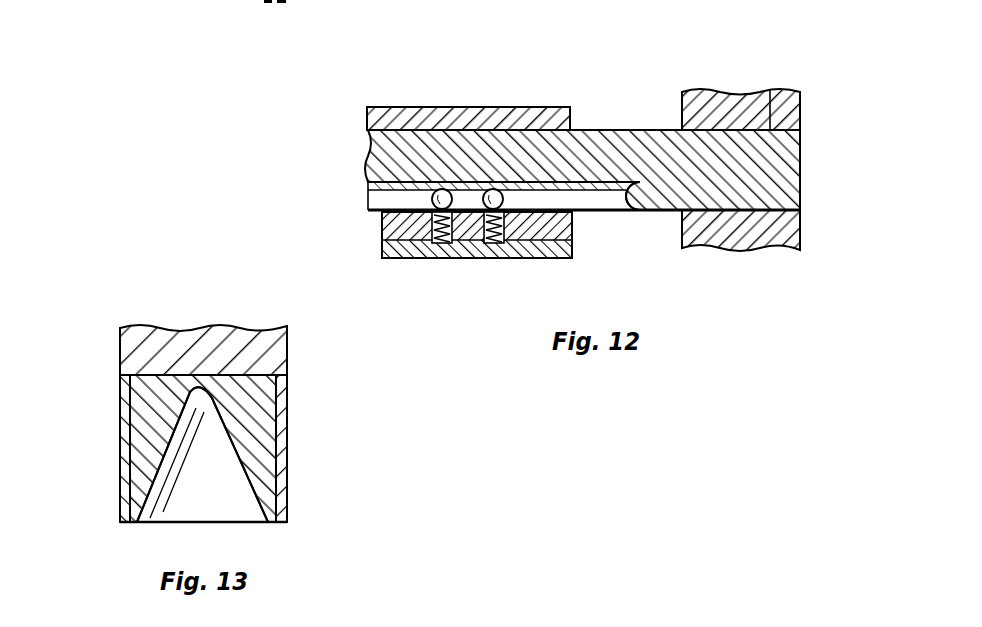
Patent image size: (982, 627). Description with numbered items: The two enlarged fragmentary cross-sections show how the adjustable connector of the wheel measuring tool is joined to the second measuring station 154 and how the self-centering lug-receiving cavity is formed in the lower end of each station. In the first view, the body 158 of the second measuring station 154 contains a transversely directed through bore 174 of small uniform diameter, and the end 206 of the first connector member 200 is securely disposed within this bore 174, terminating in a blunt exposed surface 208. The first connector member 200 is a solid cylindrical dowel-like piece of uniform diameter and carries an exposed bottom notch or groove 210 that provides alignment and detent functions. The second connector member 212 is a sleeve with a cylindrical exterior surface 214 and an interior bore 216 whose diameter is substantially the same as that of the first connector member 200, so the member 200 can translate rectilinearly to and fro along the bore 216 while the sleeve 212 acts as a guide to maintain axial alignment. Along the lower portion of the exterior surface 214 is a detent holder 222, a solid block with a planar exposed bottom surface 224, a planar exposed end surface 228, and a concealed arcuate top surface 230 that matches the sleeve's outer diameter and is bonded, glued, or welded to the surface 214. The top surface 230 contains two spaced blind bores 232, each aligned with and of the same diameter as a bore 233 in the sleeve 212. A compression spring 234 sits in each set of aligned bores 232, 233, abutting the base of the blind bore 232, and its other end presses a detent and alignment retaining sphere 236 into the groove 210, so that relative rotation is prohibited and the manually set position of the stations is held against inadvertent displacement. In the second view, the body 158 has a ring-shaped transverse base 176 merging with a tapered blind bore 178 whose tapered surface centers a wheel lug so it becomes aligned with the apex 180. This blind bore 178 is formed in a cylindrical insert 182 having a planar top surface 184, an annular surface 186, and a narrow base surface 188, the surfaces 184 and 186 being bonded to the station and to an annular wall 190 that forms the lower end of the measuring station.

In FIG. 12, the second measuring station 154 is at (708, 80).
In FIG. 12, the body 158 is at (690, 104).
In FIG. 12, the through bore 174 is at (770, 105).
In FIG. 12, the first connector member 200 is at (617, 130).
In FIG. 12, the end 206 is at (795, 192).
In FIG. 12, the blunt exposed surface 208 is at (801, 160).
In FIG. 12, the bottom notch or groove 210 is at (622, 205).
In FIG. 12, the second connector member 212 is at (392, 109).
In FIG. 12, the cylindrical exterior surface 214 is at (442, 108).
In FIG. 12, the interior bore 216 is at (372, 140).
In FIG. 12, the detent holder 222 is at (556, 258).
In FIG. 12, the planar exposed bottom surface 224 is at (388, 260).
In FIG. 12, the planar exposed end surface 228 is at (573, 247).
In FIG. 12, the concealed top surface 230 is at (573, 225).
In FIG. 12, the blind bores 232 is at (478, 258).
In FIG. 12, the bores 233 is at (384, 234).
In FIG. 12, the compression spring 234 is at (440, 259).
In FIG. 12, the detent and alignment retaining sphere 236 is at (380, 187).
In FIG. 13, the transverse base 176 is at (128, 522).
In FIG. 13, the tapered blind bore 178 is at (283, 512).
In FIG. 13, the apex 180 is at (205, 392).
In FIG. 13, the cylindrical insert 182 is at (272, 468).
In FIG. 13, the planar top surface 184 is at (283, 358).
In FIG. 13, the annular surface 186 is at (283, 447).
In FIG. 13, the narrow base surface 188 is at (140, 522).
In FIG. 13, the annular wall 190 is at (120, 458).